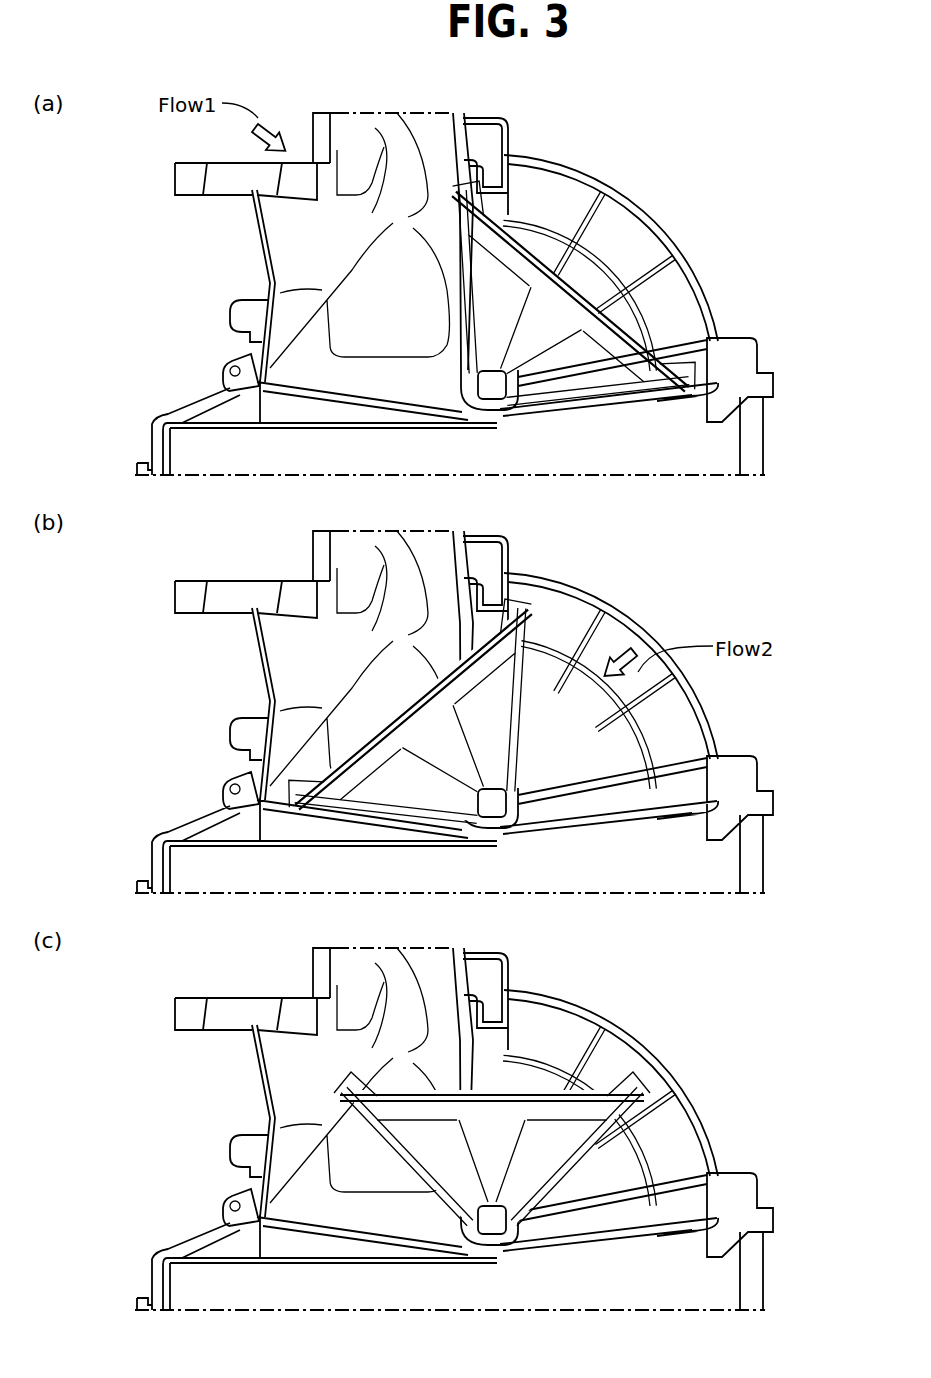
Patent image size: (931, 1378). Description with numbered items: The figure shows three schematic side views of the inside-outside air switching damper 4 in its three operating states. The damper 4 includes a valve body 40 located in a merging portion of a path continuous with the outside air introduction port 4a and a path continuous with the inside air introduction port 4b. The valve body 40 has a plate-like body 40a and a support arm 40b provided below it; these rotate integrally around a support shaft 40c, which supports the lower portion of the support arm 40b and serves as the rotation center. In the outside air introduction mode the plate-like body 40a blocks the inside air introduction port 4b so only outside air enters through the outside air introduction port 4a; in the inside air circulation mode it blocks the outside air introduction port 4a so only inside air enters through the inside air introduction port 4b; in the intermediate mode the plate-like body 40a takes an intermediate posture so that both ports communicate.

The inside-outside air switching damper 4 is at (210, 274).
The outside air introduction port 4a is at (228, 146).
The inside air introduction port 4b is at (637, 193).
The valve body 40 is at (468, 731).
The plate-like body 40a is at (632, 325).
The support arm 40b is at (690, 398).
The support shaft 40c is at (508, 413).